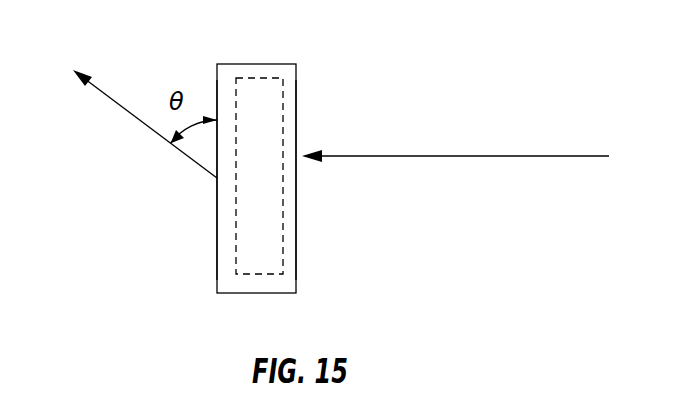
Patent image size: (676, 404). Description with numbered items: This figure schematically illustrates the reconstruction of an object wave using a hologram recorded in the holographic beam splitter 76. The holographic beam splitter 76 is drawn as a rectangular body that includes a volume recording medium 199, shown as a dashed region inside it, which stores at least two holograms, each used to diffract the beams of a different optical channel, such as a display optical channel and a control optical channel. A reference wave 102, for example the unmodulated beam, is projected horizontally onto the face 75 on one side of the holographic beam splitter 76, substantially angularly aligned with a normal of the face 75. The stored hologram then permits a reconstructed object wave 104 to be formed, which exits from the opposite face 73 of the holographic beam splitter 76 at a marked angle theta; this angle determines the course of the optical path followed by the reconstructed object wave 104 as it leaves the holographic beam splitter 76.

The holographic beam splitter 76 is at (258, 64).
The volume recording medium 199 is at (257, 274).
The face 73 is at (217, 212).
The face 75 is at (296, 210).
The reconstructed object wave 104 is at (138, 122).
The reference wave 102 is at (487, 156).